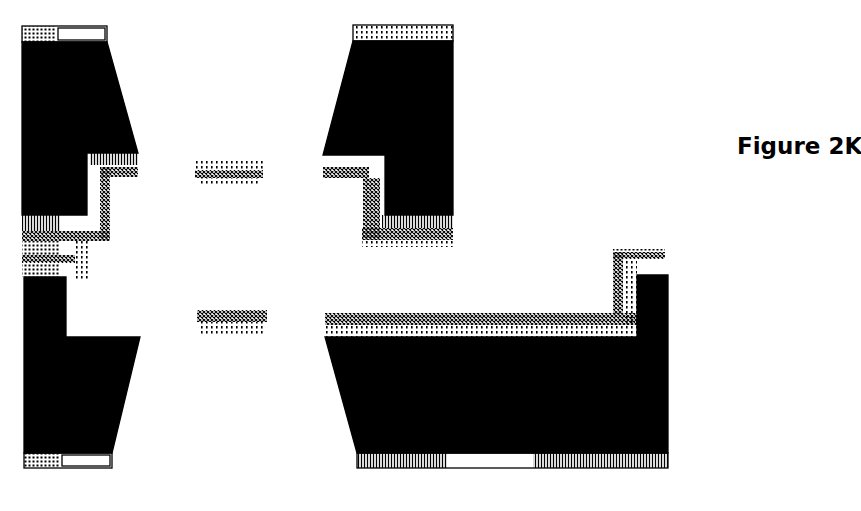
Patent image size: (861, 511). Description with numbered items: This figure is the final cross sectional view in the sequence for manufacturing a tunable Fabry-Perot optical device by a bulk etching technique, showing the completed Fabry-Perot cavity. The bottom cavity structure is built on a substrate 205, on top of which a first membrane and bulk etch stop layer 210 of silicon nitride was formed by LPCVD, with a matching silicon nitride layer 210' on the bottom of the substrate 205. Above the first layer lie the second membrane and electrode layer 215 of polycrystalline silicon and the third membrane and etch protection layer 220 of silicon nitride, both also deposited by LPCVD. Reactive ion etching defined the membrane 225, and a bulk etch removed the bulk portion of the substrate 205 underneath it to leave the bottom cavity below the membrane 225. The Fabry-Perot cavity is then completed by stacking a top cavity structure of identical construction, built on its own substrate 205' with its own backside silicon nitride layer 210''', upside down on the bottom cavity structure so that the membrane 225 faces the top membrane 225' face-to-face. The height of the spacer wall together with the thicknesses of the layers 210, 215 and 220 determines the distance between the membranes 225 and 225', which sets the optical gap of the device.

The substrate 205 is at (542, 364).
The substrate of top cavity structure 205' is at (433, 128).
The first membrane and bulk etch stop layer 210 is at (547, 297).
The bottom bulk etch stop layer 210' is at (557, 463).
The bottom bulk etch stop layer of top cavity structure 210''' is at (441, 35).
The second membrane and electrode layer 215 is at (549, 280).
The third membrane and etch protection layer 220 is at (675, 234).
The membrane 225 is at (232, 348).
The top membrane 225' is at (229, 149).